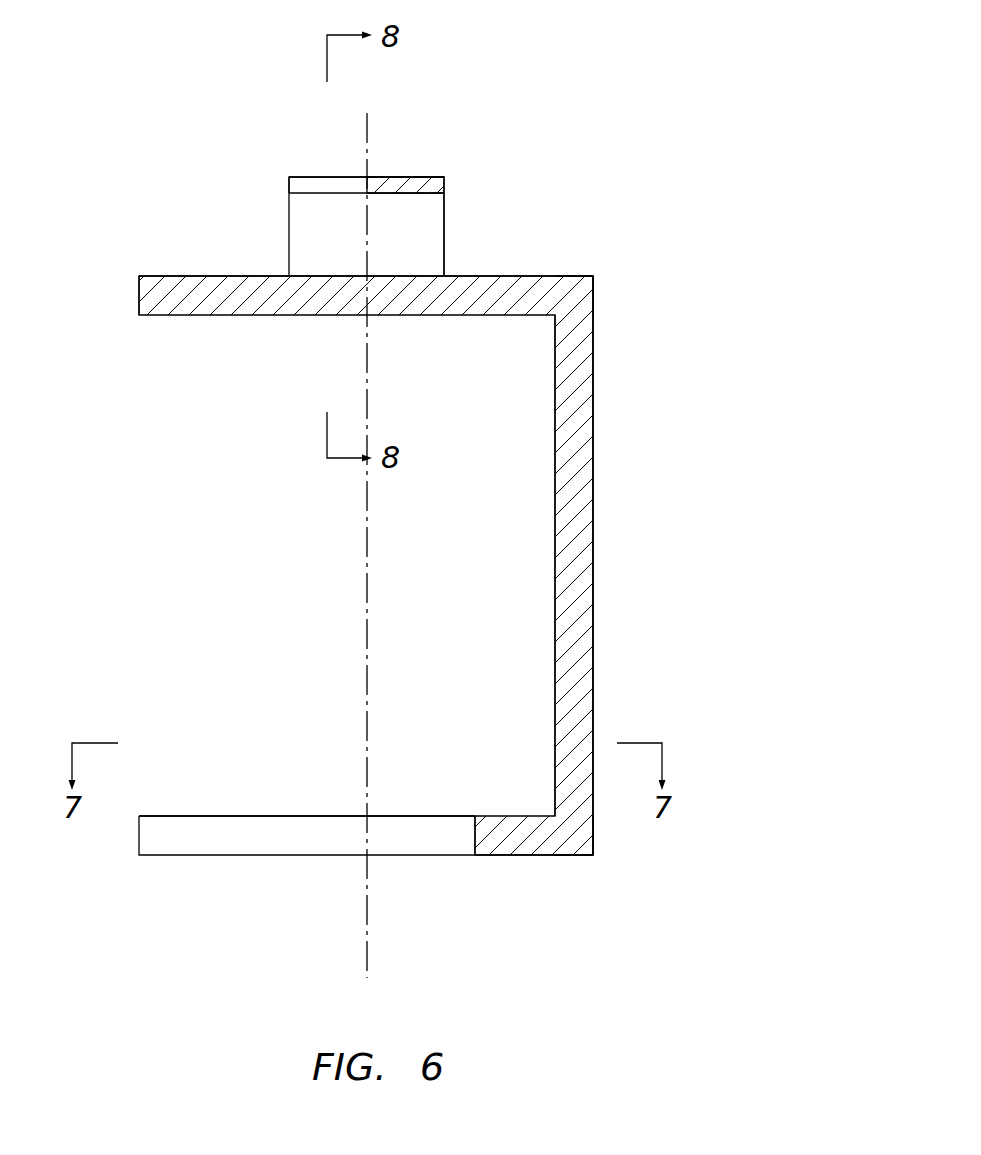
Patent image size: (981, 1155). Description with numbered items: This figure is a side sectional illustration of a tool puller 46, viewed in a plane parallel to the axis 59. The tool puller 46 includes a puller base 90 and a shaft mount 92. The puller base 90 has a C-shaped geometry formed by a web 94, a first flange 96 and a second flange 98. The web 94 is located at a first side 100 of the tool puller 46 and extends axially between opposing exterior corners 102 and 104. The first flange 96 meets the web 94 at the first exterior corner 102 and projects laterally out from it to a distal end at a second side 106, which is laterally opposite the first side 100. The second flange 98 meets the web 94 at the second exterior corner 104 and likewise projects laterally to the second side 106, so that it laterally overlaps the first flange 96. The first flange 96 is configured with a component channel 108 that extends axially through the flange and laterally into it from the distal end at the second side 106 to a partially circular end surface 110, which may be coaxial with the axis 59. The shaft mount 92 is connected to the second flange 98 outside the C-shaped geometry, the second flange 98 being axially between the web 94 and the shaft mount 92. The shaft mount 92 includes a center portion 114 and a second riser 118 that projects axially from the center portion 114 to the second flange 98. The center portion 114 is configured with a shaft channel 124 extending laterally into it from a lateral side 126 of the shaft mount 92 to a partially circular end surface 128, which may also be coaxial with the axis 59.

The tool puller 46 is at (371, 500).
The axis 59 is at (368, 966).
The puller base 90 is at (371, 568).
The shaft mount 92 is at (375, 182).
The web 94 is at (597, 545).
The first flange 96 is at (292, 858).
The second flange 98 is at (240, 274).
The first side 100 is at (594, 608).
The first exterior corner 102 is at (593, 855).
The second exterior corner 104 is at (593, 276).
The second side 106 is at (139, 293).
The component channel 108 is at (222, 838).
The end surface 110 is at (475, 835).
The center portion 114 is at (432, 174).
The second riser 118 is at (447, 232).
The shaft channel 124 is at (316, 174).
The lateral side 126 is at (289, 183).
The end surface 128 is at (395, 193).